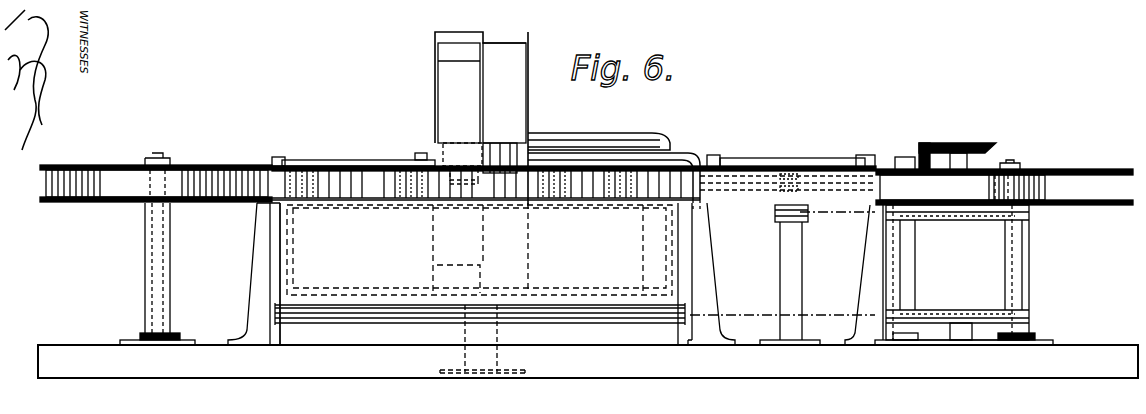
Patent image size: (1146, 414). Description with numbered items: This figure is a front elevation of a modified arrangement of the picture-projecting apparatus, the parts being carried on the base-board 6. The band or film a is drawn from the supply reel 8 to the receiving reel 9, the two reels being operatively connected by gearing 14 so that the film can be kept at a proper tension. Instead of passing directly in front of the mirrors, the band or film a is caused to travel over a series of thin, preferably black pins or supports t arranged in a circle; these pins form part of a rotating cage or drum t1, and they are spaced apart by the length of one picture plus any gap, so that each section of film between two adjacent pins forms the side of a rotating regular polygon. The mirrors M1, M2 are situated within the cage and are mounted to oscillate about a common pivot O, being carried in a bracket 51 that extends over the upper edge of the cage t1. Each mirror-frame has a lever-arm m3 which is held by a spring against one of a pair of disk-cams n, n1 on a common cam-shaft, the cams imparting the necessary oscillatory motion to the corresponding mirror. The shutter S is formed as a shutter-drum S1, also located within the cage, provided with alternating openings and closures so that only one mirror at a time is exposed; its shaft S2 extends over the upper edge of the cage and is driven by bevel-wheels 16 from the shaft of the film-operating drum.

The base-board 6 is at (588, 361).
The supply reel 8 is at (198, 166).
The receiving reel 9 is at (1060, 169).
The band or film a is at (232, 172).
The gearing 14 is at (172, 332).
The bevel-wheels 16 is at (946, 143).
The bracket 51 is at (612, 133).
The pins or supports t is at (380, 205).
The cage or drum t1 is at (480, 288).
The disk-cam n is at (831, 172).
The disk-cam n1 is at (848, 205).
The shutter S is at (474, 85).
The shutter-drum S1 is at (432, 42).
The shaft S2 is at (346, 160).
The pivot O is at (476, 142).
The mirror M1 is at (532, 140).
The mirror M2 is at (446, 152).
The lever-arm m3 is at (690, 160).